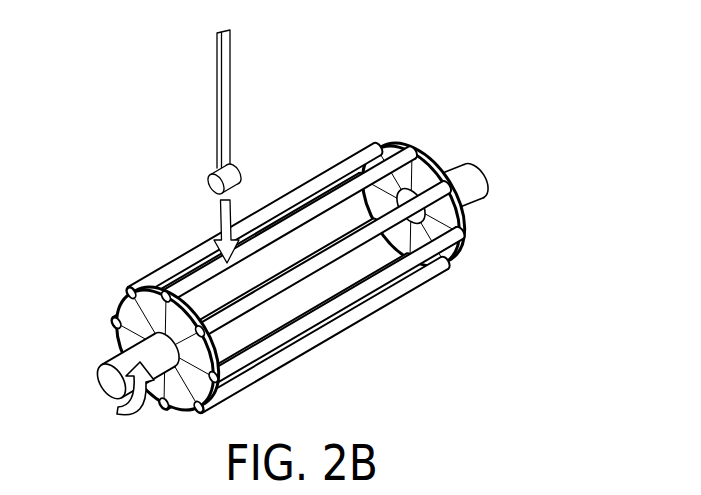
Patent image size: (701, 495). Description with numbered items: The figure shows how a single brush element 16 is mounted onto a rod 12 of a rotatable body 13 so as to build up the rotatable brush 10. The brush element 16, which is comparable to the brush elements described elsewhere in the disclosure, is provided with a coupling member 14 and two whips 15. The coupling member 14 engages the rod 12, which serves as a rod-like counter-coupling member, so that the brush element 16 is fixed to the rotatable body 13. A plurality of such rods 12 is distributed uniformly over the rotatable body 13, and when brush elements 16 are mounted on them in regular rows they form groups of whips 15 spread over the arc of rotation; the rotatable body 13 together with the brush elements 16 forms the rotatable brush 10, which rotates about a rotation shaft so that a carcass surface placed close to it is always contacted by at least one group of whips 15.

The rotatable brush 10 is at (104, 281).
The rod 12 is at (352, 190).
The rotatable body 13 is at (110, 384).
The coupling member 14 is at (212, 176).
The whips 15 is at (217, 33).
The brush element 16 is at (150, 97).